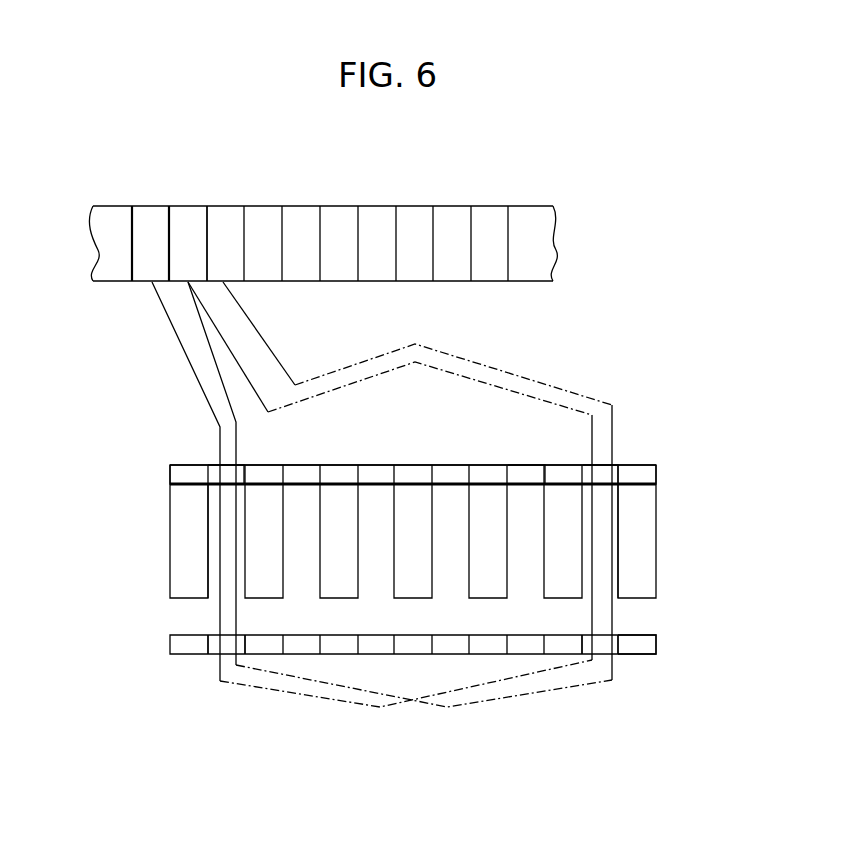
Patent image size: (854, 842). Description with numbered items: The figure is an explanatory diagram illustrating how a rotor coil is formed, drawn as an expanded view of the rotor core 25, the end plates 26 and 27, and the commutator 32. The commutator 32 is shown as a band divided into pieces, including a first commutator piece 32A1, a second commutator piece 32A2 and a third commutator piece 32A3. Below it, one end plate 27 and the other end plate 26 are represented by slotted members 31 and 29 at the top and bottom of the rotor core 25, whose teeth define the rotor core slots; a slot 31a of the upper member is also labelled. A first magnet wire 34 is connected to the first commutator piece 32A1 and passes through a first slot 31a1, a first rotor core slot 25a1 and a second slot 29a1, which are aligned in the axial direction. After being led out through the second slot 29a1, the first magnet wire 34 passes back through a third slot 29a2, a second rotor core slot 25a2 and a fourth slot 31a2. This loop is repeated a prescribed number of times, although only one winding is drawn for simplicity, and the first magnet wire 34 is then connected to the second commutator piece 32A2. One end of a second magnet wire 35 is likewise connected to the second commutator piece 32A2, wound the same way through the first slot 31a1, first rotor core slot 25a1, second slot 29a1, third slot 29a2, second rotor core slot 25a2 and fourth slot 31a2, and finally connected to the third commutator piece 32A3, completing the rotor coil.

The commutator 32 is at (382, 203).
The first commutator piece 32A1 is at (145, 242).
The second commutator piece 32A2 is at (187, 238).
The third commutator piece 32A3 is at (232, 238).
The first magnet wire 34 is at (218, 343).
The second magnet wire 35 is at (202, 313).
The end plate 27 is at (645, 451).
The end plate slot member 31 is at (190, 475).
The slot 31a is at (527, 475).
The first slot 31a1 is at (227, 477).
The fourth slot 31a2 is at (603, 473).
The rotor core 25 is at (190, 538).
The first rotor core slot 25a1 is at (230, 563).
The second rotor core slot 25a2 is at (603, 540).
The end plate slot member 29 is at (190, 647).
The second slot 29a1 is at (227, 648).
The third slot 29a2 is at (607, 640).
The end plate 26 is at (633, 662).